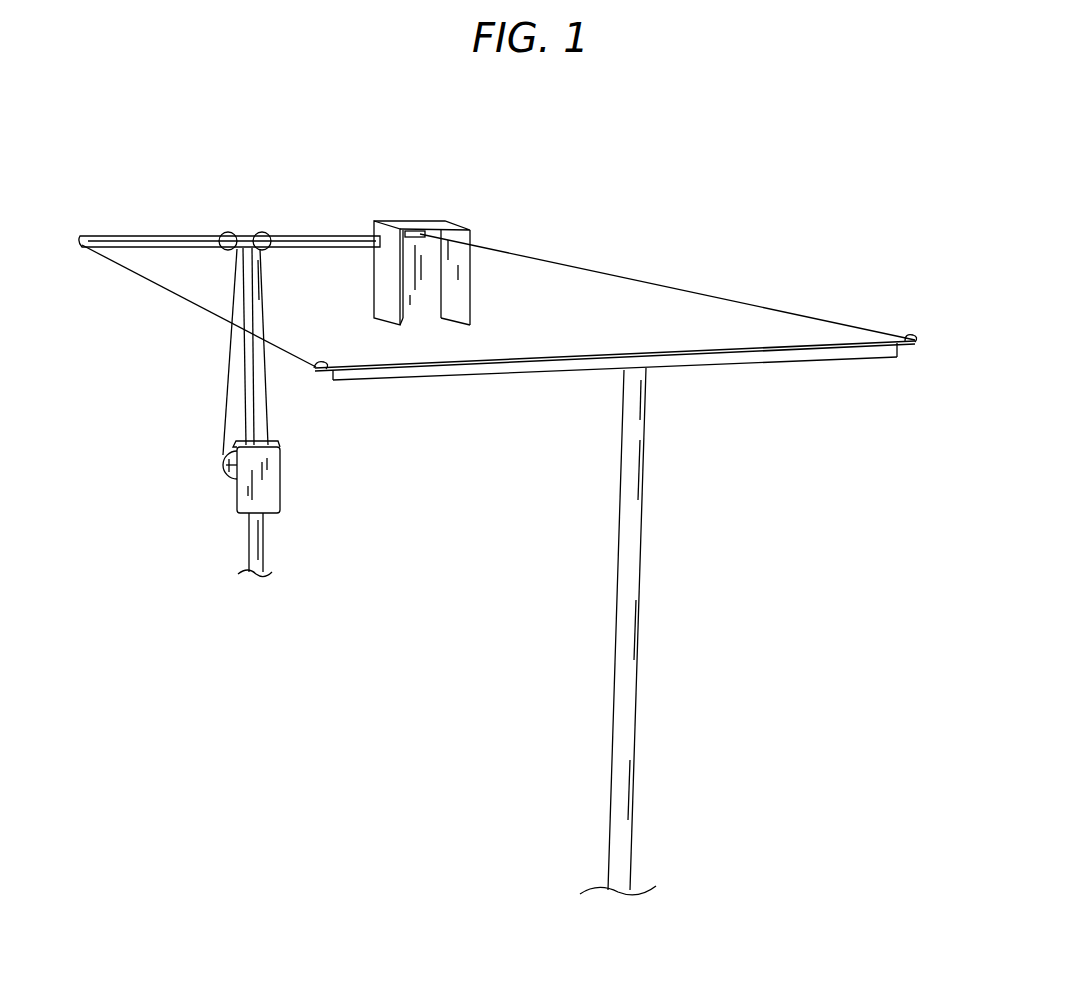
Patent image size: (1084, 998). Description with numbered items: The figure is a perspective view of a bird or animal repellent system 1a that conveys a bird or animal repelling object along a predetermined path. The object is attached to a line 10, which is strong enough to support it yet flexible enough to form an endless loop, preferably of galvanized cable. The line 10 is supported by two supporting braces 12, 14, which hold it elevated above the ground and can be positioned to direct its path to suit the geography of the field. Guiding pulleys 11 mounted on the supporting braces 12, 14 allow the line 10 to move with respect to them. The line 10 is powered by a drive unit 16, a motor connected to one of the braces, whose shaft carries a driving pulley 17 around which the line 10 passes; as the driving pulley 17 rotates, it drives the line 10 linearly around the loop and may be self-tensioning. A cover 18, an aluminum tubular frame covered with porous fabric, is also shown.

The bird or animal repellent system 1a is at (572, 176).
The line 10 is at (716, 294).
The guiding pulleys 11 is at (320, 360).
The supporting brace 12 is at (620, 628).
The supporting brace 14 is at (249, 360).
The drive unit 16 is at (277, 490).
The driving pulley 17 is at (222, 468).
The cover 18 is at (394, 238).